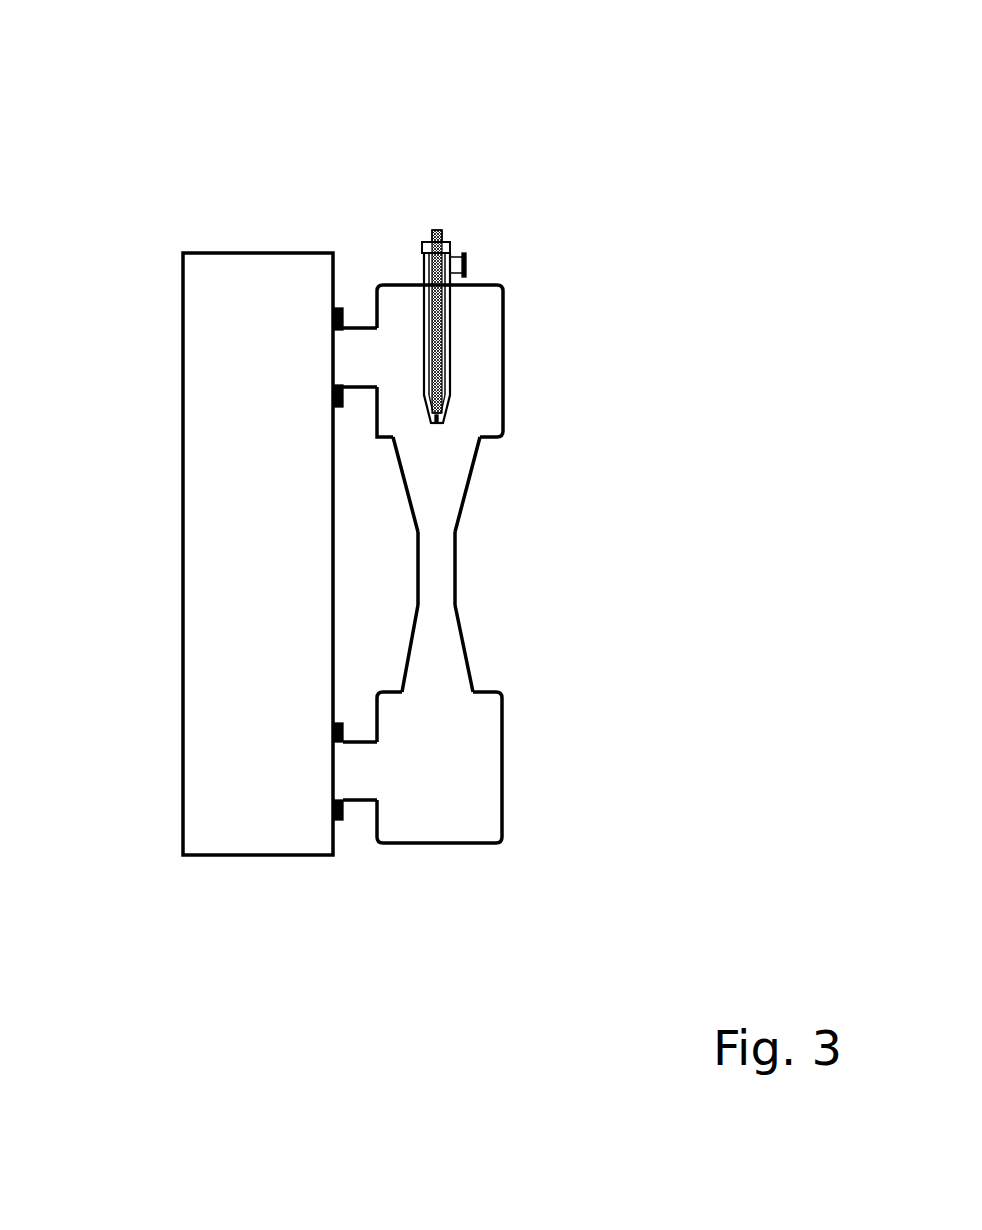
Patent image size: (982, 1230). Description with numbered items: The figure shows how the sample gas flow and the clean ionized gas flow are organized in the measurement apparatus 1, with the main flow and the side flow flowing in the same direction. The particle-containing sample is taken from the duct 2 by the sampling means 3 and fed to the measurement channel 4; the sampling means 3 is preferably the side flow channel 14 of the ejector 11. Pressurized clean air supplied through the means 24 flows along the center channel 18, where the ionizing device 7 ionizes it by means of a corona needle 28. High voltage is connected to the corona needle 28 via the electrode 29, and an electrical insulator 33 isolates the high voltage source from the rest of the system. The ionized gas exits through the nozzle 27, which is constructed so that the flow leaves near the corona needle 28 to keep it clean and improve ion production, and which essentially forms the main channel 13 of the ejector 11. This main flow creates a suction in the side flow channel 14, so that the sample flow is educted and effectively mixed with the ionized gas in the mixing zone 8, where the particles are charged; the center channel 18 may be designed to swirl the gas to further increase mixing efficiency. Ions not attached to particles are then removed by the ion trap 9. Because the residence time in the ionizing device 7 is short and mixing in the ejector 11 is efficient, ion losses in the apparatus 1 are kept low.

The measurement apparatus 1 is at (560, 275).
The duct 2 is at (203, 295).
The means for directing the sample flow 3 is at (342, 306).
The measurement channel 4 is at (483, 625).
The ionizing device 7 is at (448, 293).
The mixing zone 8 is at (457, 423).
The ion trap 9 is at (483, 563).
The ejector 11 is at (393, 532).
The main channel 13 is at (403, 484).
The side flow channel 14 is at (357, 397).
The center channel 18 is at (452, 300).
The means for directing the pressurized air 24 is at (482, 262).
The nozzle 27 is at (447, 432).
The corona needle 28 is at (440, 423).
The electrode 29 is at (444, 234).
The electrical insulator 33 is at (427, 230).